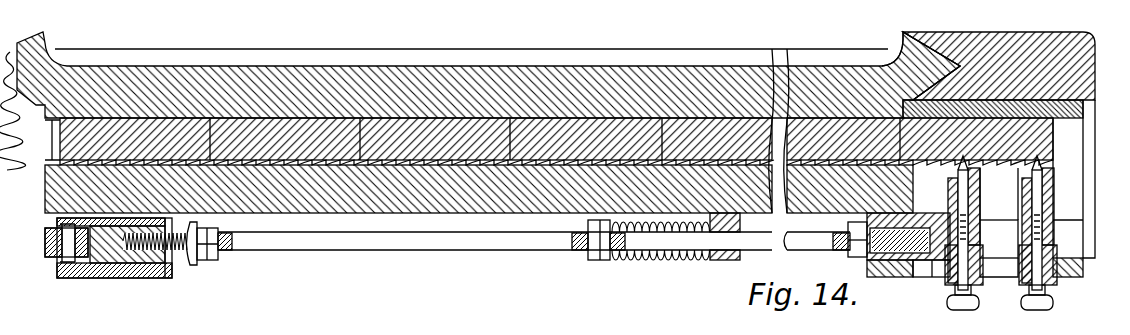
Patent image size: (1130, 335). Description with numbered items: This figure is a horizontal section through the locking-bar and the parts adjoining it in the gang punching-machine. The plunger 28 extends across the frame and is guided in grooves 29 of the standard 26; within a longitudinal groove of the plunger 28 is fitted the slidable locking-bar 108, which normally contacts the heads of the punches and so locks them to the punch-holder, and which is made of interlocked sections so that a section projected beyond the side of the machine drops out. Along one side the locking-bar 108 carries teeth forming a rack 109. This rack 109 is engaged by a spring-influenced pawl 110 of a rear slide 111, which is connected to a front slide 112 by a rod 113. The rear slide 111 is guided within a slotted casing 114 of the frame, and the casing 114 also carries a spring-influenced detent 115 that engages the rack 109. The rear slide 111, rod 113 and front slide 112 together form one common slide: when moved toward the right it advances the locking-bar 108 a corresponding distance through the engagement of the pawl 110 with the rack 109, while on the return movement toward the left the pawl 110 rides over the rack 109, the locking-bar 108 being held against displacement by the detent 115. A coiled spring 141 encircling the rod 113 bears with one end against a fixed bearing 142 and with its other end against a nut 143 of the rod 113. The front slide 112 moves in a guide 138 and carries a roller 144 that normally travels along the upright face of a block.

The standard 26 is at (1095, 72).
The plunger 28 is at (478, 72).
The grooves 29 is at (933, 31).
The locking-bar 108 is at (463, 143).
The rack 109 is at (983, 160).
The pawl 110 is at (957, 170).
The rear slide 111 is at (898, 278).
The front slide 112 is at (113, 252).
The rod 113 is at (373, 244).
The slotted casing 114 is at (1008, 267).
The detent 115 is at (1045, 170).
The guide 138 is at (150, 278).
The coiled spring 141 is at (633, 258).
The fixed bearing 142 is at (718, 262).
The nut 143 is at (608, 258).
The roller 144 is at (48, 250).